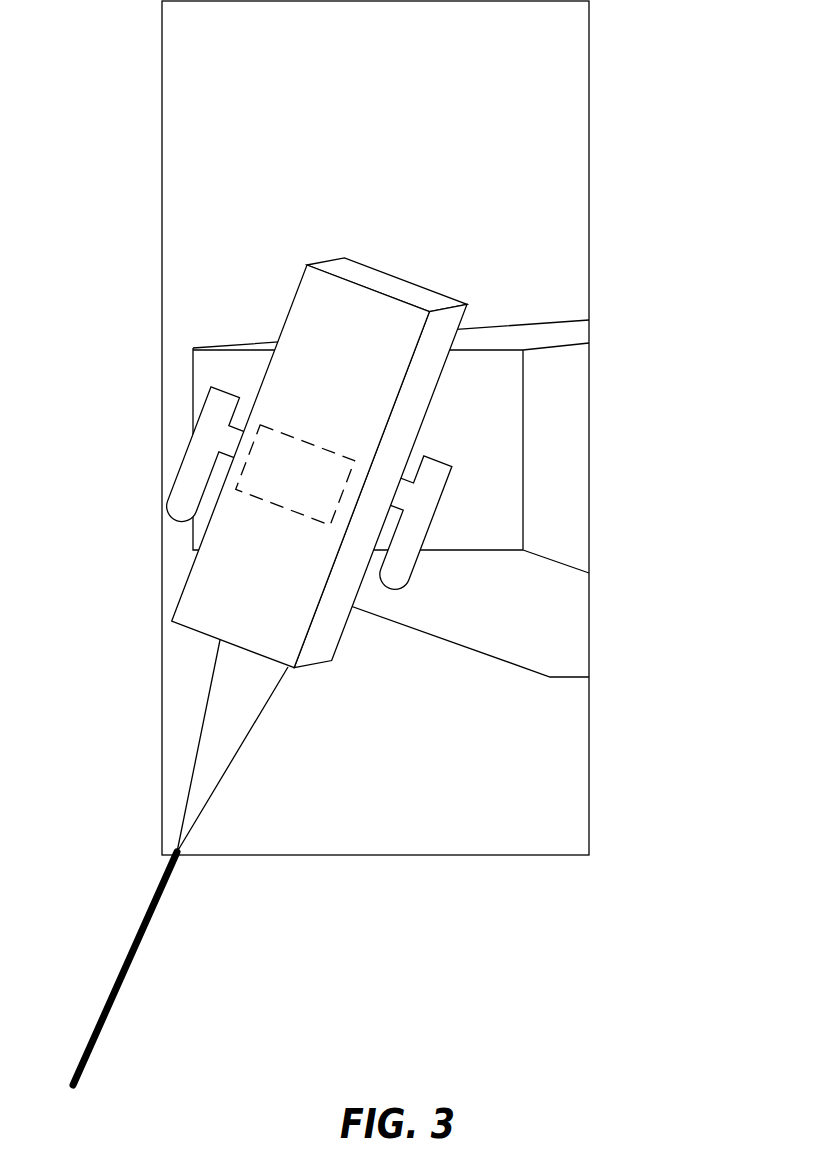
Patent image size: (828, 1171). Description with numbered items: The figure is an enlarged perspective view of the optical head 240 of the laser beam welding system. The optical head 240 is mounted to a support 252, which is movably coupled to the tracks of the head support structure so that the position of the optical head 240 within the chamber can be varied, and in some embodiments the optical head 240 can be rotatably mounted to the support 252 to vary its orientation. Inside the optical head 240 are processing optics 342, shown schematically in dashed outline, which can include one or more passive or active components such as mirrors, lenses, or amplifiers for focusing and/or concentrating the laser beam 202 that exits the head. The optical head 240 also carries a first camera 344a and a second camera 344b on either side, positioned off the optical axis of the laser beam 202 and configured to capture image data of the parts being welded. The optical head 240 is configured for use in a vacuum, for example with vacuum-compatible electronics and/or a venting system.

The optical head 240 is at (126, 113).
The support 252 is at (556, 417).
The processing optics 342 is at (295, 475).
The first camera 344a is at (202, 453).
The second camera 344b is at (418, 521).
The laser beam 202 is at (116, 981).